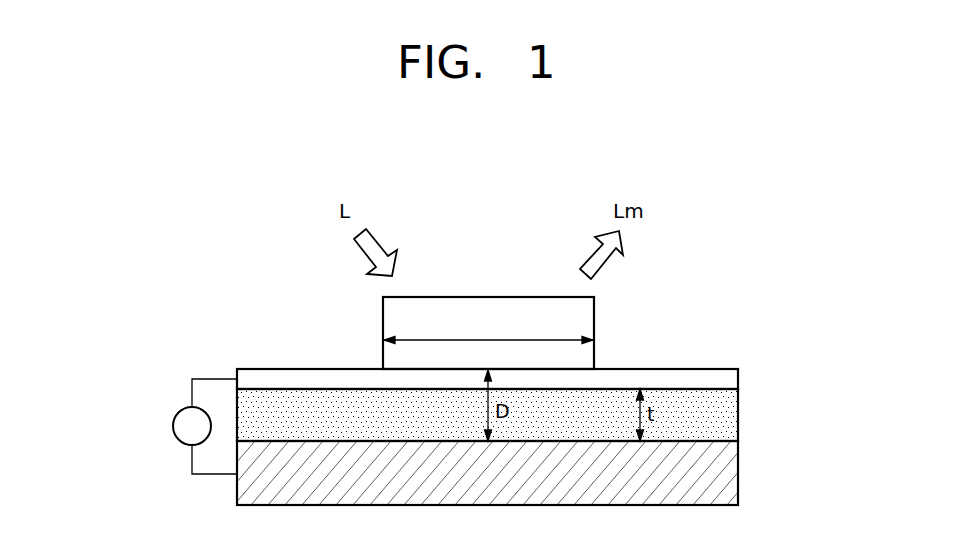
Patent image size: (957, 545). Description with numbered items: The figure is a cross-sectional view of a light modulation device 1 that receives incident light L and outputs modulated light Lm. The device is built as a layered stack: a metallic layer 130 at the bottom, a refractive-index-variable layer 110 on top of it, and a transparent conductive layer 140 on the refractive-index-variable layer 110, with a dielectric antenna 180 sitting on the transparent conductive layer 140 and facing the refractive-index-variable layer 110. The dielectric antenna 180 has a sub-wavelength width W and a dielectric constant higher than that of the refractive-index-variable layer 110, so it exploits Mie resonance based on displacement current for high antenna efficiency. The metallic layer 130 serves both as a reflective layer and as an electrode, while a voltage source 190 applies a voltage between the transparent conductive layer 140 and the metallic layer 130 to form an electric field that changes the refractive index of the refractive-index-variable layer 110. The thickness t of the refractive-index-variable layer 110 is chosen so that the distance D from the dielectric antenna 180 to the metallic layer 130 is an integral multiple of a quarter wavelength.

The light modulation device 1 is at (752, 300).
The refractive-index-variable layer 110 is at (740, 415).
The metallic layer 130 is at (740, 473).
The transparent conductive layer 140 is at (740, 380).
The dielectric antenna 180 is at (595, 316).
The voltage source 190 is at (172, 427).